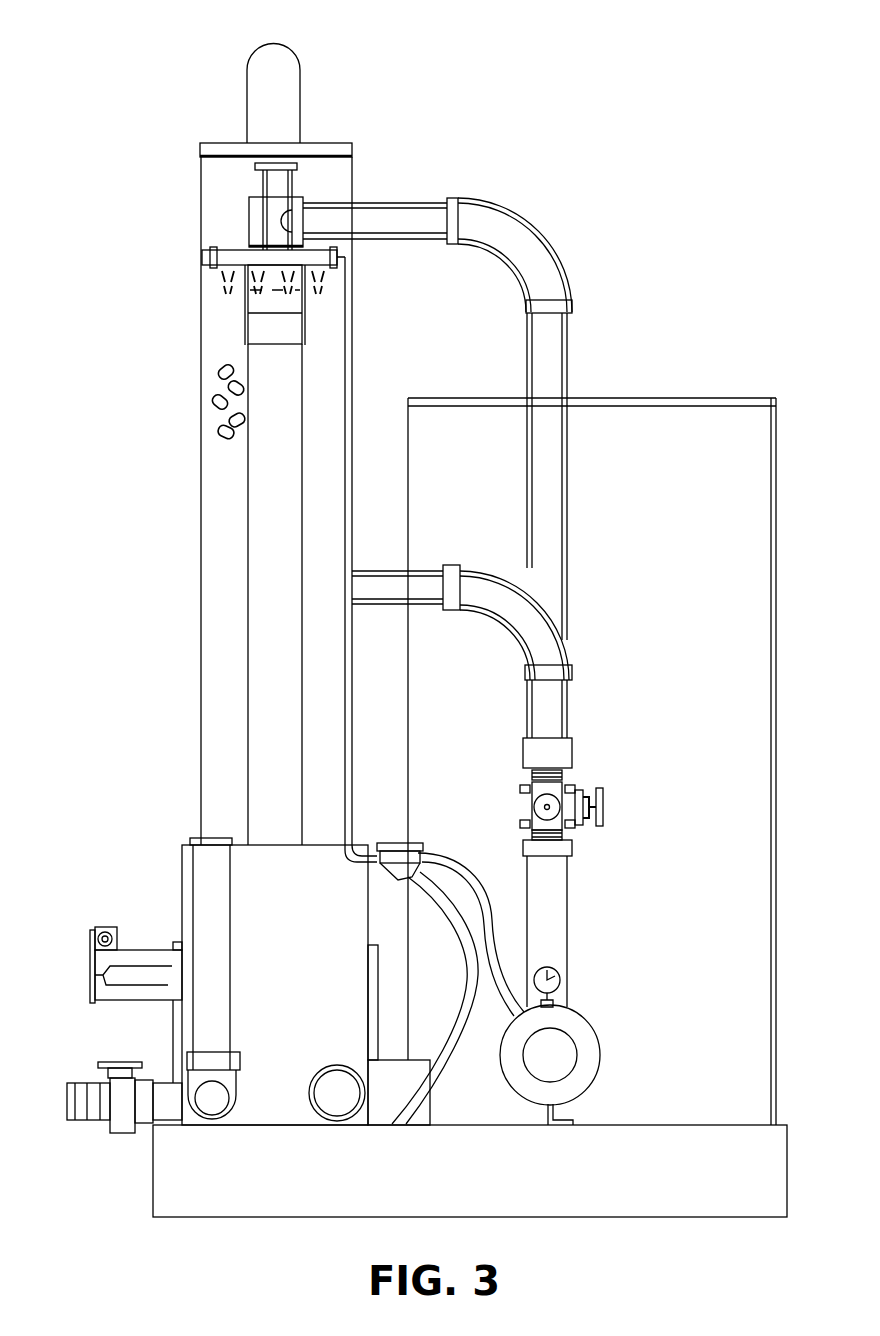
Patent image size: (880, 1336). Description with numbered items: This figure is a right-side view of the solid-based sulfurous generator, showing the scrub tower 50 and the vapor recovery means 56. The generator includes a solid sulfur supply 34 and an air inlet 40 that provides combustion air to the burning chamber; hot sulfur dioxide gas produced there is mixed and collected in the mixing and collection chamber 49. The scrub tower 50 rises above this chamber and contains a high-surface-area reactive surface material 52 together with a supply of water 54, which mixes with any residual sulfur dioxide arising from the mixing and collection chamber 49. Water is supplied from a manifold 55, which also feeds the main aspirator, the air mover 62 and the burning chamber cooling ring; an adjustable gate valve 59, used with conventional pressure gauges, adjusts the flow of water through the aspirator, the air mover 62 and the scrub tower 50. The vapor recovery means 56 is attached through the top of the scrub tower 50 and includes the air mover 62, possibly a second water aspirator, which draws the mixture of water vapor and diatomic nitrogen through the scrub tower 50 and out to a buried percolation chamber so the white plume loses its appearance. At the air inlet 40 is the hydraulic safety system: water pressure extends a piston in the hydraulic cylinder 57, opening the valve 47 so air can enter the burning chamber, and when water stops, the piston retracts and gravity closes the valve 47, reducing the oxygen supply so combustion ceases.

The solid sulfur supply 34 is at (700, 519).
The air inlet 40 is at (102, 914).
The valve 47 is at (93, 978).
The mixing and collection chamber 49 is at (300, 969).
The scrub tower 50 is at (241, 777).
The reactive surface material 52 is at (212, 398).
The supply of water 54 is at (228, 255).
The manifold 55 is at (564, 1069).
The vapor recovery means 56 is at (281, 57).
The hydraulic cylinder 57 is at (142, 987).
The adjustable gate valve 59 is at (605, 808).
The air mover 62 is at (287, 185).